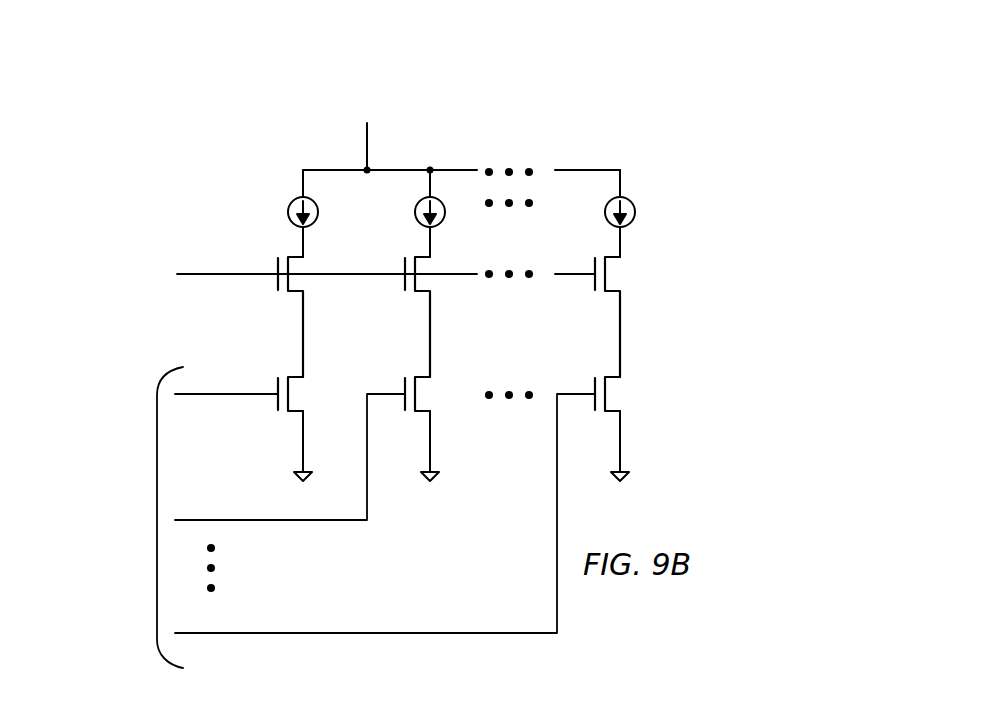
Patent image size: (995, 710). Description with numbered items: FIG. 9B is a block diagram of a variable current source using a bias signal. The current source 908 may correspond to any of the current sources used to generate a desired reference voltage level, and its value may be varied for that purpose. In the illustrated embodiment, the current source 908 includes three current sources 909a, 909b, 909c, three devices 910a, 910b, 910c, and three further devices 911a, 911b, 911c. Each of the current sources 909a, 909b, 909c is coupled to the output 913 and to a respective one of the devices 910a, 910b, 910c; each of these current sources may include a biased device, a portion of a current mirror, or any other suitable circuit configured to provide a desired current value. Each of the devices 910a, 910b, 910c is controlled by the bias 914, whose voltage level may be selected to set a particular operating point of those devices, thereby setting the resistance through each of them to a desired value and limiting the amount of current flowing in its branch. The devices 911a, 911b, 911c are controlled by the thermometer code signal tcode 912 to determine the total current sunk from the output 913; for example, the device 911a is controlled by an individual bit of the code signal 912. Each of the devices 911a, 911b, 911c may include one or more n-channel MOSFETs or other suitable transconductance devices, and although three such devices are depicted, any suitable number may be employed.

The current source 908 is at (657, 166).
The current source 909a is at (319, 212).
The current source 909b is at (442, 224).
The current source 909c is at (636, 212).
The device 910a is at (306, 300).
The device 910b is at (433, 298).
The device 910c is at (623, 300).
The device 911a is at (305, 370).
The device 911b is at (432, 370).
The device 911c is at (622, 372).
The tcode n:1 912 is at (157, 517).
The output 913 is at (369, 126).
The bias 914 is at (386, 276).